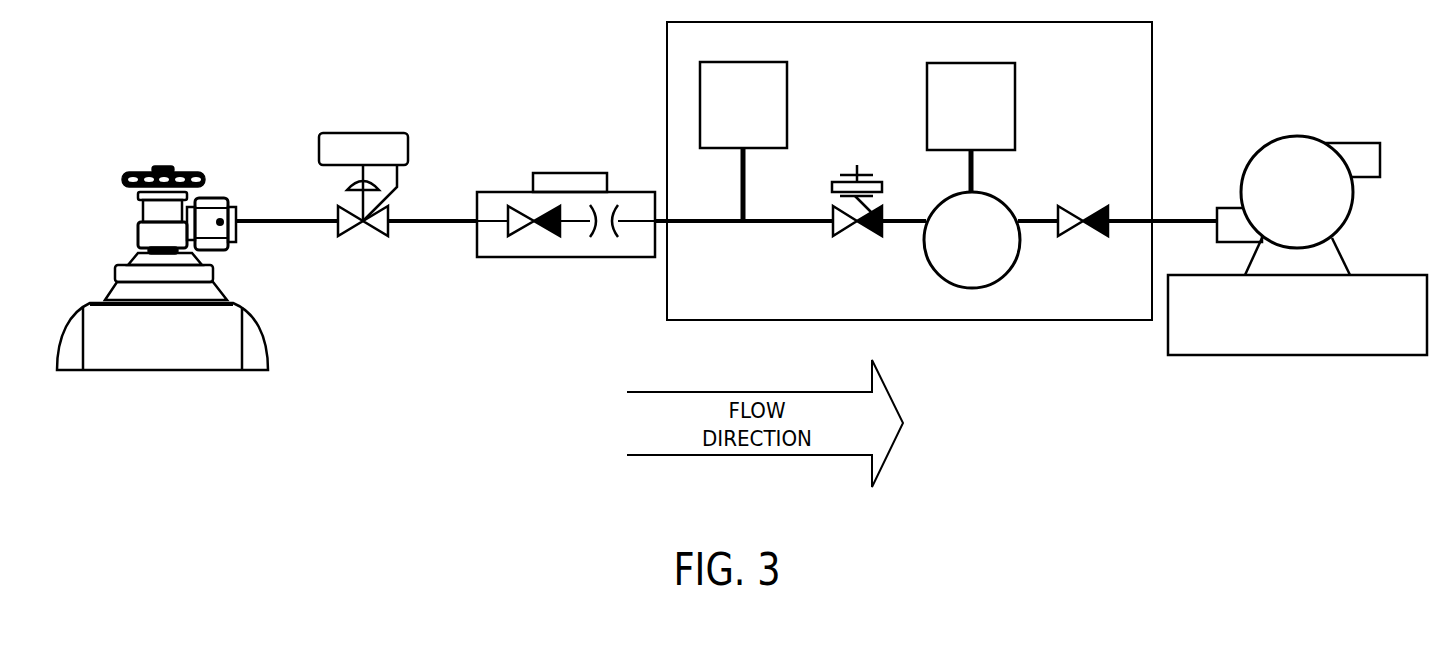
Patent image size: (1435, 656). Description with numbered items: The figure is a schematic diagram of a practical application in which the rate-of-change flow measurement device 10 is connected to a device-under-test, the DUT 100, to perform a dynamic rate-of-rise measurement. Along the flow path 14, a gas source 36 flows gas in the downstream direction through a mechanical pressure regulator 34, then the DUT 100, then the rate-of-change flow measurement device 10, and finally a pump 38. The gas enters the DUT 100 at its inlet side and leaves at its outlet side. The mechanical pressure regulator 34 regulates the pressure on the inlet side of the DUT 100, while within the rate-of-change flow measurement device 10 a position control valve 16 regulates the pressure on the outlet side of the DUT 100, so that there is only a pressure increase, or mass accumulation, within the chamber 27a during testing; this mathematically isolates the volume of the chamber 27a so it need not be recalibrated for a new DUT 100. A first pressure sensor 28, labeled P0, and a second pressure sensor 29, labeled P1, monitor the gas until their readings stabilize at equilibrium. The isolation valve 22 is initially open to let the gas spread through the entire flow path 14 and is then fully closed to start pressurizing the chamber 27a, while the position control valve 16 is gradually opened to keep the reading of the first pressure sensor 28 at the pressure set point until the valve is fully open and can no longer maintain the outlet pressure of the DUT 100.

The rate-of-change flow measurement device 10 is at (833, 76).
The flow path 14 is at (310, 223).
The position control valve 16 is at (877, 237).
The isolation valve 22 is at (1098, 239).
The chamber 27a is at (953, 257).
The first pressure sensor 28 is at (731, 128).
The second pressure sensor 29 is at (959, 129).
The mechanical pressure regulator 34 is at (385, 237).
The gas source 36 is at (192, 365).
The pump 38 is at (1338, 330).
The device-under-test (DUT) 100 is at (608, 259).